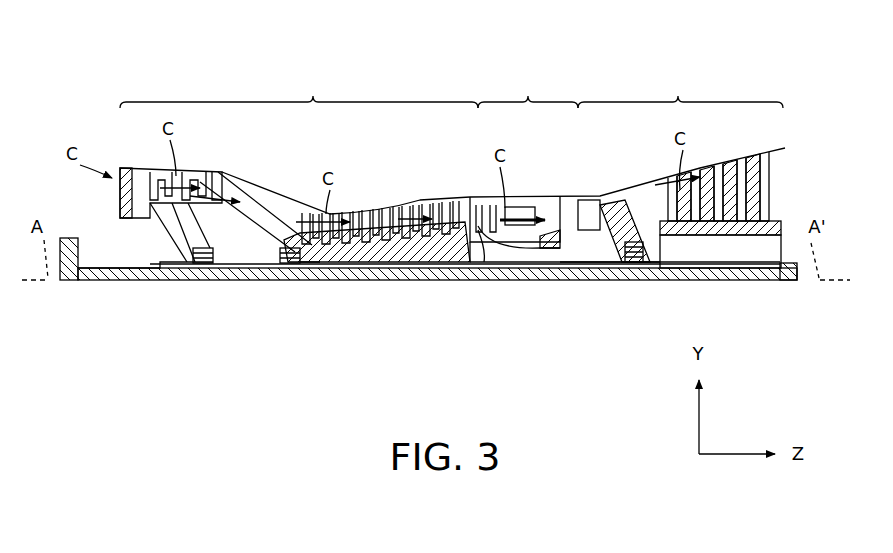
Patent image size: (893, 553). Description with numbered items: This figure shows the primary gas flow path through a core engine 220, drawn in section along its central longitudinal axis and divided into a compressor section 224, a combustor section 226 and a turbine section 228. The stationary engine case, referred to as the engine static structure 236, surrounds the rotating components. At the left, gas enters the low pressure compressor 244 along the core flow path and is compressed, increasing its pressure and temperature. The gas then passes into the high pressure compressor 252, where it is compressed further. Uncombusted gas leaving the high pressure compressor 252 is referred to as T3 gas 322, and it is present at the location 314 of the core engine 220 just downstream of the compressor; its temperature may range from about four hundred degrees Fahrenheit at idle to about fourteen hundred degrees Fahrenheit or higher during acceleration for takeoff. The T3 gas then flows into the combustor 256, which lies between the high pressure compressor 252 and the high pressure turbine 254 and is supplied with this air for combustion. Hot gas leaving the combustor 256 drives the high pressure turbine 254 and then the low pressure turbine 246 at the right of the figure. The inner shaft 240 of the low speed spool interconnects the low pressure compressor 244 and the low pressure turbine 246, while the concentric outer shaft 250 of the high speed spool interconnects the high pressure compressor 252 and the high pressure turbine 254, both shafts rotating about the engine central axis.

The core engine 220 is at (572, 62).
The compressor section 224 is at (299, 86).
The combustor section 226 is at (528, 86).
The turbine section 228 is at (680, 86).
The engine static structure 236 is at (262, 200).
The inner shaft 240 is at (400, 282).
The low pressure compressor section 244 is at (200, 176).
The low pressure turbine section 246 is at (720, 170).
The outer shaft 250 is at (545, 268).
The high pressure compressor 252 is at (388, 210).
The high pressure turbine section 254 is at (610, 210).
The combustor 256 is at (522, 208).
The location 314 is at (478, 222).
The T3 gas 322 is at (480, 240).